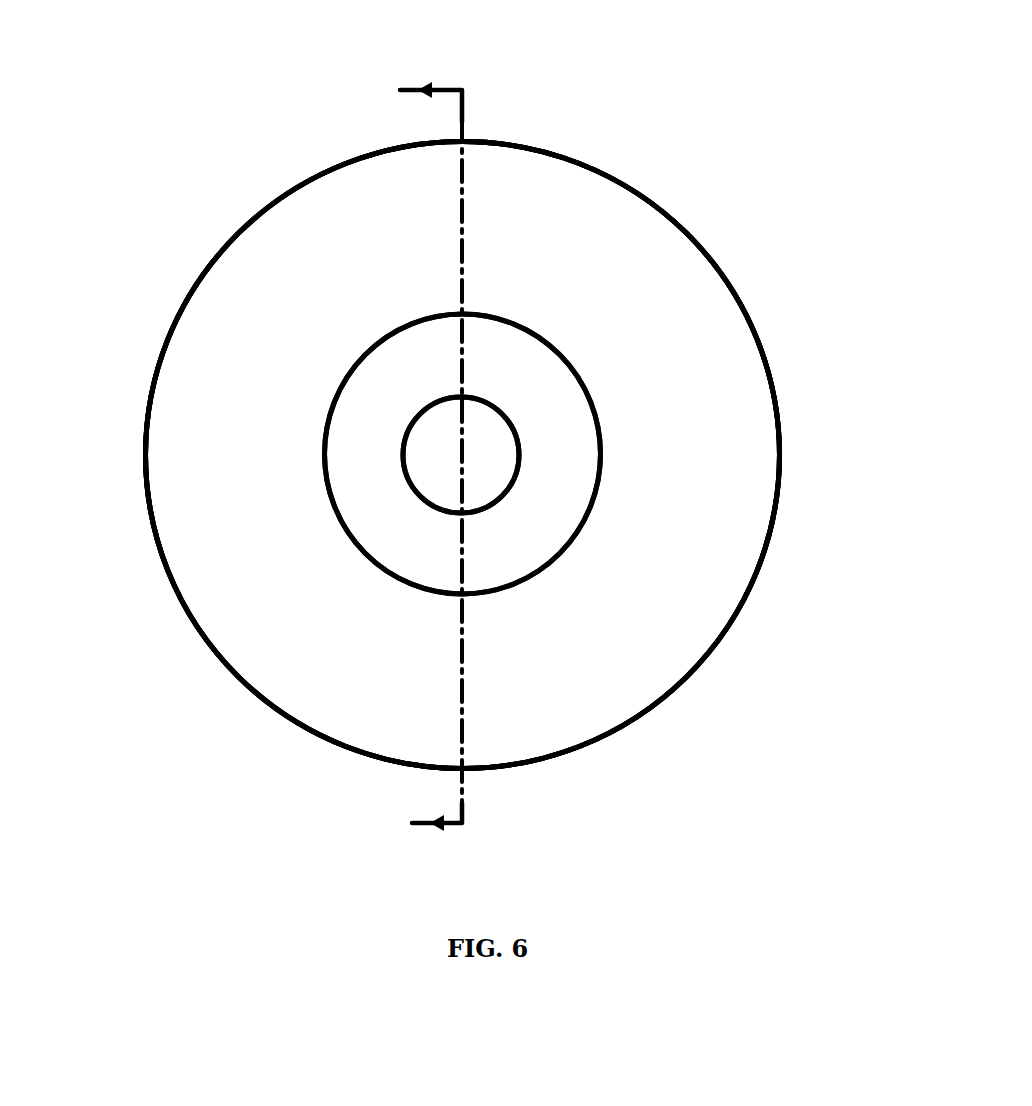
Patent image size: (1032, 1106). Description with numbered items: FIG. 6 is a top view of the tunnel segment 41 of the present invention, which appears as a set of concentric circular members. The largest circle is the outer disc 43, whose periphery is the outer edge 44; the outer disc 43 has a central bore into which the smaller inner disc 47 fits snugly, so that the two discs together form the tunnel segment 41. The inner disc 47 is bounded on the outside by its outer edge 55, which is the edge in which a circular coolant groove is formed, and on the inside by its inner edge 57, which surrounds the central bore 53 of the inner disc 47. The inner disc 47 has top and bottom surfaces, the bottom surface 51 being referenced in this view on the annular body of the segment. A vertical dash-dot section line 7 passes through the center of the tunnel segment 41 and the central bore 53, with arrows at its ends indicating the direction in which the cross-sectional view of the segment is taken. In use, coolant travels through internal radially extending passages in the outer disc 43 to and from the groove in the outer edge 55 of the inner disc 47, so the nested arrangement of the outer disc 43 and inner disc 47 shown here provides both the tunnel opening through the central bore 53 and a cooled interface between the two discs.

The section line 7- 7 is at (411, 457).
The tunnel segment 41 is at (637, 227).
The outer disc 43 is at (562, 135).
The outer edge 44 is at (767, 345).
The inner disc 47 is at (580, 492).
The bottom surface 51 is at (287, 633).
The central bore 53 is at (442, 468).
The outer edge 55 is at (548, 568).
The inner edge 57 is at (500, 400).